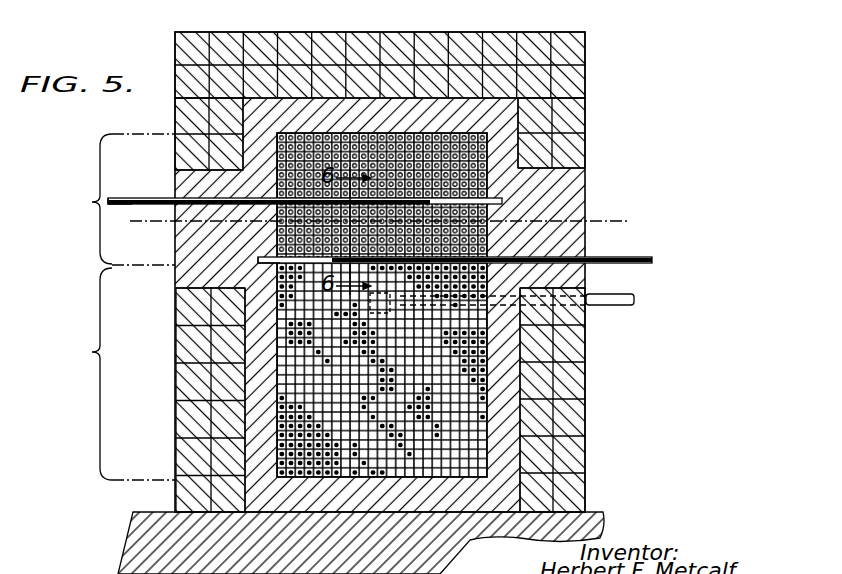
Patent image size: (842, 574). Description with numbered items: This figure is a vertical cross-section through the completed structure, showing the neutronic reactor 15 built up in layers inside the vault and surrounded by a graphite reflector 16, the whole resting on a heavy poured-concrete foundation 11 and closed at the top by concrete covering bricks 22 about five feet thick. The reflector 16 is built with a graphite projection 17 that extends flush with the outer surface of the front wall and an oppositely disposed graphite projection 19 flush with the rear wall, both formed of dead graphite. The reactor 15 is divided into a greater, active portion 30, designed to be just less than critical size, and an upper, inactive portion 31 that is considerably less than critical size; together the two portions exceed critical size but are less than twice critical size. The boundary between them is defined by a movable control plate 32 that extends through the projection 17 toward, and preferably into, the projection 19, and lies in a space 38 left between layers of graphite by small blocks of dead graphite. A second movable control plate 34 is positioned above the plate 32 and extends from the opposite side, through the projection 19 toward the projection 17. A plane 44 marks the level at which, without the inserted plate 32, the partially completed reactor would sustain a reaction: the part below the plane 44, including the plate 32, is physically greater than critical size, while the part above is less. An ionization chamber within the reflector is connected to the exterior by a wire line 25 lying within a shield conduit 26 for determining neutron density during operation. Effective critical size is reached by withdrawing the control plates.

The foundation 11 is at (596, 510).
The neutronic reactor 15 is at (292, 370).
The graphite reflector 16 is at (497, 118).
The graphite projection 17 is at (586, 186).
The graphite projection 19 is at (180, 182).
The covering bricks 22 is at (463, 38).
The wire line 25 is at (634, 299).
The shield conduit 26 is at (613, 306).
The active portion 30 is at (112, 374).
The inactive portion 31 is at (115, 199).
The movable control plate 32 is at (640, 256).
The second movable control plate 34 is at (112, 198).
The space 38 is at (260, 263).
The plane 44 is at (628, 218).